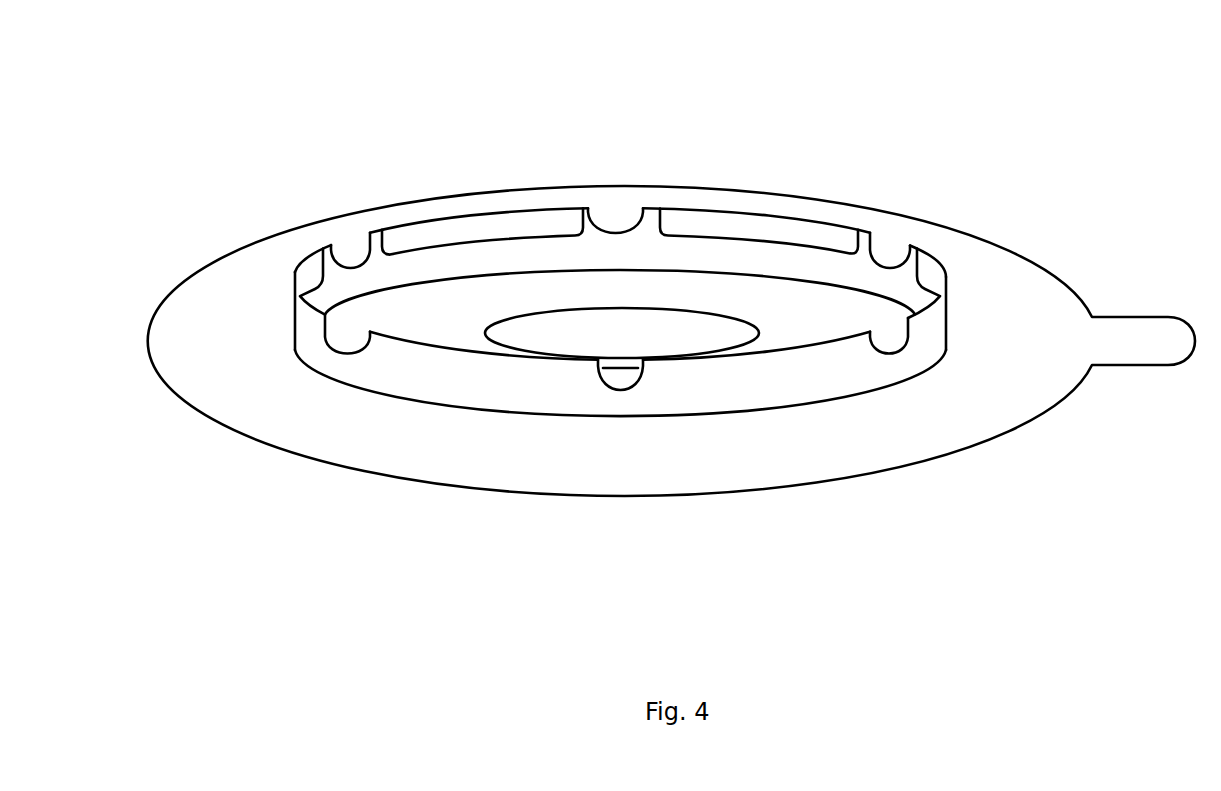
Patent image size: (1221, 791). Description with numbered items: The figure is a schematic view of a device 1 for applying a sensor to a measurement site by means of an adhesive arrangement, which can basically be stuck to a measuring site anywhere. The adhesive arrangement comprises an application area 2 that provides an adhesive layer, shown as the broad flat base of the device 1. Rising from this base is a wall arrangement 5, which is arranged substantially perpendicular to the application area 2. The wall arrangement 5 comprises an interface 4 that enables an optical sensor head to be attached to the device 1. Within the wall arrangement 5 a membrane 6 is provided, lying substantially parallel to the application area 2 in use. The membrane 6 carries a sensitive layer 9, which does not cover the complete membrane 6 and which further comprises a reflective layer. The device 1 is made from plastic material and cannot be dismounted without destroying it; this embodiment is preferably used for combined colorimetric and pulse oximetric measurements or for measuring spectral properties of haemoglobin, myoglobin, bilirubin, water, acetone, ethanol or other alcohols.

The device 1 is at (639, 32).
The application area 2 is at (458, 448).
The interface 4 is at (810, 232).
The wall arrangement 5 is at (828, 375).
The membrane 6 is at (468, 305).
The sensitive layer 9 is at (643, 340).